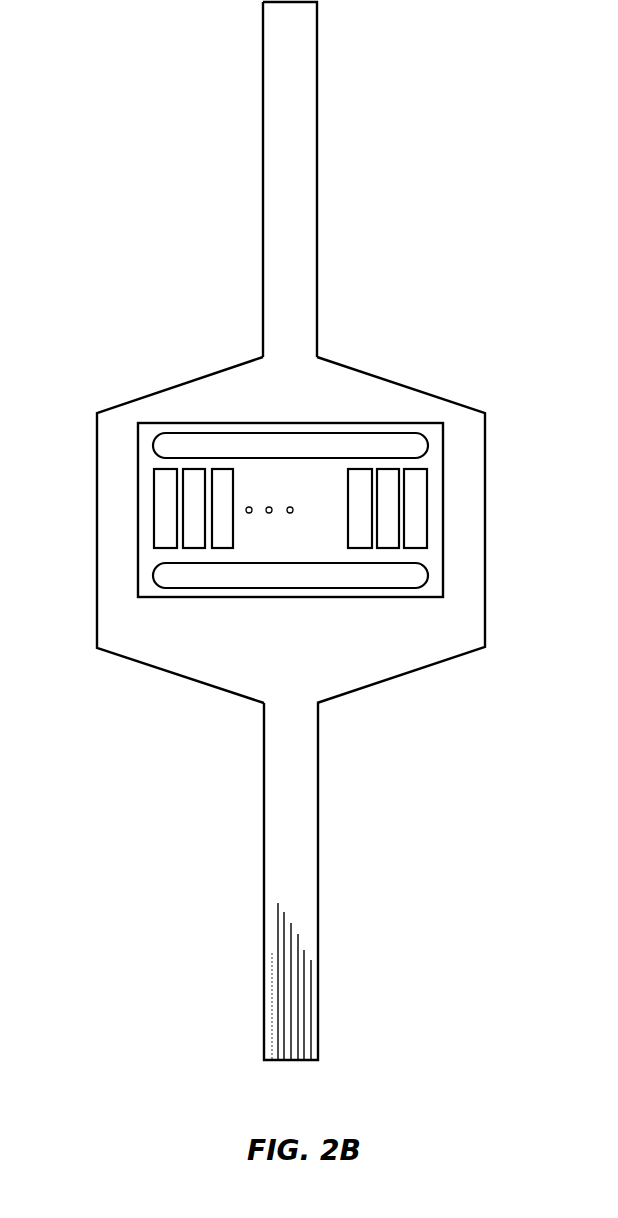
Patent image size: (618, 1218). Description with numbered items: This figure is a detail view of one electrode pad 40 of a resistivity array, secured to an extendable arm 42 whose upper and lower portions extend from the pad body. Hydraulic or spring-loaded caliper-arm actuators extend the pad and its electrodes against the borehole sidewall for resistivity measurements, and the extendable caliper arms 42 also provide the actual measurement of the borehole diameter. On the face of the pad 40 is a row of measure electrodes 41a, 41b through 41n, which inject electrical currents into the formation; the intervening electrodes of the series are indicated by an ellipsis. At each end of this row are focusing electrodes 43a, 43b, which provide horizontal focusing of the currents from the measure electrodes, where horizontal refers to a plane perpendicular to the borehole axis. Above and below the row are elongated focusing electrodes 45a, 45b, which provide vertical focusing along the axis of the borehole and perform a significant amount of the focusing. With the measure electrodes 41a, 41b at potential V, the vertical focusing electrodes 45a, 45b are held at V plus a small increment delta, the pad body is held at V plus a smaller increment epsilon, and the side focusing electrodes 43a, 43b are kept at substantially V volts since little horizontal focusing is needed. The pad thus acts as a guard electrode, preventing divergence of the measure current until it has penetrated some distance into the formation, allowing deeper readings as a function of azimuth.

The probe card body 40 is at (353, 368).
The extendable arm 42 is at (316, 228).
The measure electrode 41a is at (195, 490).
The measure electrode 41b is at (222, 533).
The measure electrode 41n is at (385, 490).
The focusing electrode 43a is at (165, 500).
The focusing electrode 43b is at (420, 500).
The focusing electrode 45a is at (237, 423).
The focusing electrode 45b is at (415, 575).